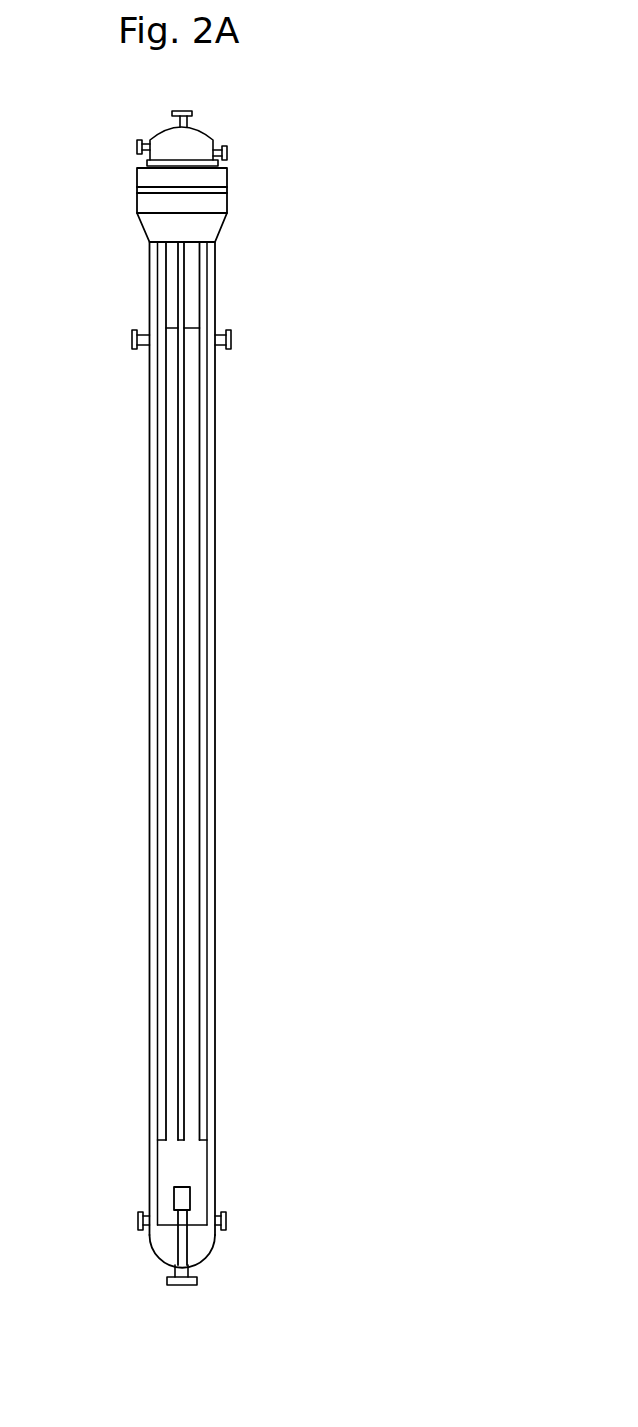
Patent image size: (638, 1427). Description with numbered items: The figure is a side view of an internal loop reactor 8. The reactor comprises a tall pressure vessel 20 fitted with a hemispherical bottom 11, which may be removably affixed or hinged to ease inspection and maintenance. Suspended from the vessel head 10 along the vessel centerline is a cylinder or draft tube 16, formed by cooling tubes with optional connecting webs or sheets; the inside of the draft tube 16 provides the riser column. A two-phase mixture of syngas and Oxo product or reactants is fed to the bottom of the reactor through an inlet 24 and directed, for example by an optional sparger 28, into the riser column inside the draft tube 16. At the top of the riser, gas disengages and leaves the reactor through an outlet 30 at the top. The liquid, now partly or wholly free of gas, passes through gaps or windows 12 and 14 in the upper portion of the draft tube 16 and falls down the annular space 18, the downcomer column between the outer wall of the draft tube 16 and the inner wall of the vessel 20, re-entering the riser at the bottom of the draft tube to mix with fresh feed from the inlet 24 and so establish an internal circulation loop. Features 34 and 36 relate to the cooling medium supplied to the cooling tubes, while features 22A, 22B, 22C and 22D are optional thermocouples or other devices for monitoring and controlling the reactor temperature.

The internal loop reactor 8 is at (270, 614).
The vessel head 10 is at (137, 180).
The hemispherical bottom 11 is at (149, 1254).
The gap or window 12 is at (171, 273).
The gap or window 14 is at (193, 309).
The draft tube 16 is at (158, 619).
The annular space (downcomer column) 18 is at (155, 779).
The pressure vessel 20 is at (148, 1067).
The thermocouple 22A is at (132, 340).
The thermocouple 22B is at (231, 339).
The thermocouple 22C is at (138, 1222).
The thermocouple 22D is at (226, 1222).
The inlet 24 is at (183, 1297).
The sparger 28 is at (182, 1187).
The outlet 30 is at (187, 113).
The cooling medium feature 34 is at (137, 146).
The cooling medium feature 36 is at (226, 152).